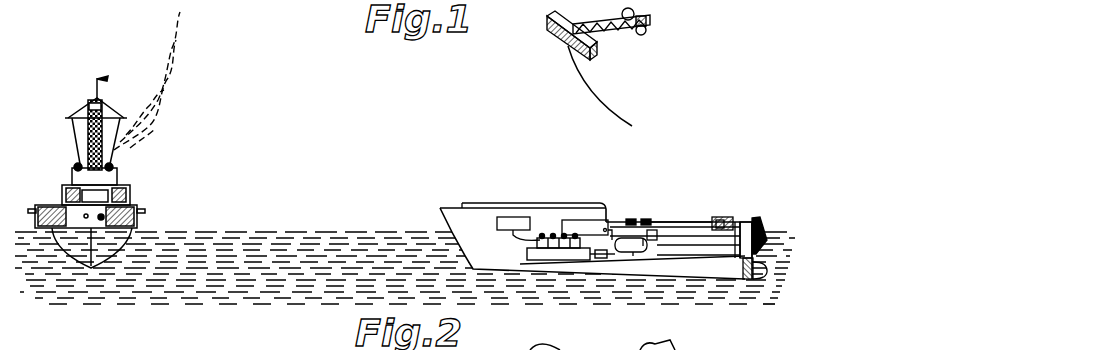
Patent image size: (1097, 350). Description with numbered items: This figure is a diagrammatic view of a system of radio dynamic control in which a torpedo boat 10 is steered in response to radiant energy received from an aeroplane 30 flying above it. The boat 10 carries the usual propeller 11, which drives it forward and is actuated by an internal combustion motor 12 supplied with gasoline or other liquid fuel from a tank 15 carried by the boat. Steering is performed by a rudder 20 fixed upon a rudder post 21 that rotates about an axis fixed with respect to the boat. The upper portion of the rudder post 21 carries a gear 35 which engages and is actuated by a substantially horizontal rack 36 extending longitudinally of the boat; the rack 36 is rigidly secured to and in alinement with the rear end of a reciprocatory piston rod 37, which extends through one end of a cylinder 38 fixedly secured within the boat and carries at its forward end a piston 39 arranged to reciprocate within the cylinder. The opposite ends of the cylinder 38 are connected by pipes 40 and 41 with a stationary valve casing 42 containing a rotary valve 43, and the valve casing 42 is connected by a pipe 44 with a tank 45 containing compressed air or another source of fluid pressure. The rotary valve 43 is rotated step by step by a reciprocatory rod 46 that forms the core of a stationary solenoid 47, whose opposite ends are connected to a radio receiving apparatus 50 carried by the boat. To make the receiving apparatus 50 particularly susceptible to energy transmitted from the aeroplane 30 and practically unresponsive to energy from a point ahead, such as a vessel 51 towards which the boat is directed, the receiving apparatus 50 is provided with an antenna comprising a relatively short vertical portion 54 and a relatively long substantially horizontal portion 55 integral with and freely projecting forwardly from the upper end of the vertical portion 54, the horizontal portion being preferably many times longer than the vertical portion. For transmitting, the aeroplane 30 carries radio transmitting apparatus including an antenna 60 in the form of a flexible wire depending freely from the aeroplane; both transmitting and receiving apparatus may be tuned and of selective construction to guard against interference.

The torpedo boat 10 is at (446, 214).
The propeller 11 is at (746, 273).
The internal combustion motor 12 is at (535, 253).
The tank 15 is at (500, 230).
The rudder 20 is at (761, 274).
The rudder post 21 is at (763, 240).
The aeroplane 30 is at (598, 34).
The gear 35 is at (758, 222).
The rack 36 is at (746, 222).
The piston rod 37 is at (736, 222).
The cylinder 38 is at (722, 218).
The piston 39 is at (716, 219).
The pipe 40 is at (666, 226).
The pipe 41 is at (680, 237).
The valve casing 42 is at (652, 240).
The rotary valve 43 is at (643, 246).
The pipe 44 is at (633, 256).
The tank 45 is at (616, 252).
The reciprocatory rod 46 is at (645, 219).
The solenoid 47 is at (632, 218).
The radio receiving apparatus 50 is at (600, 241).
The vessel 51 is at (104, 140).
The vertical portion 54 is at (605, 218).
The horizontal portion 55 is at (540, 198).
The antenna 60 is at (602, 86).